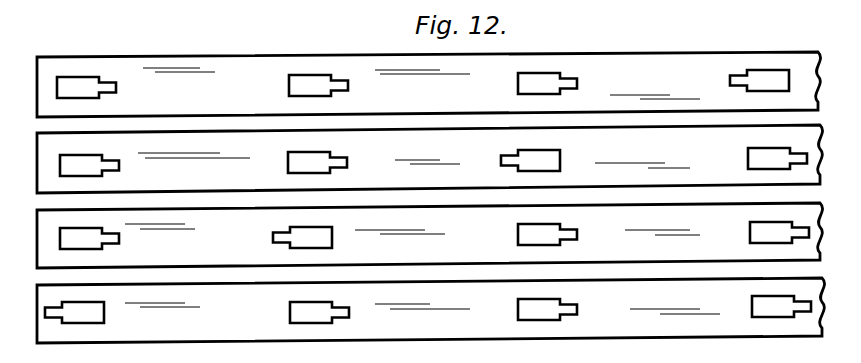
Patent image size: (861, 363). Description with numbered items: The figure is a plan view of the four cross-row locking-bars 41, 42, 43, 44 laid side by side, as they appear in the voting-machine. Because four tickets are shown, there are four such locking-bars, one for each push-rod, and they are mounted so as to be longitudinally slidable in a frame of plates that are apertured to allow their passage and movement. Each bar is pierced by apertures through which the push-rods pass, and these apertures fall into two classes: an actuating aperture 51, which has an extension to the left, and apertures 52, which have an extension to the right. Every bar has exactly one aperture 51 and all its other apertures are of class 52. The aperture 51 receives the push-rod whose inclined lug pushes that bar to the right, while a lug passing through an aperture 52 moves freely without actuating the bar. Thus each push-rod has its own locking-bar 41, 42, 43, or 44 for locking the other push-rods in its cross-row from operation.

The cross locking bar 41 is at (431, 310).
The cross locking bar 42 is at (430, 235).
The cross locking bar 43 is at (430, 159).
The cross locking bar 44 is at (429, 84).
The actuating aperture 51 is at (748, 91).
The aperture with extension to the right 52 is at (328, 96).